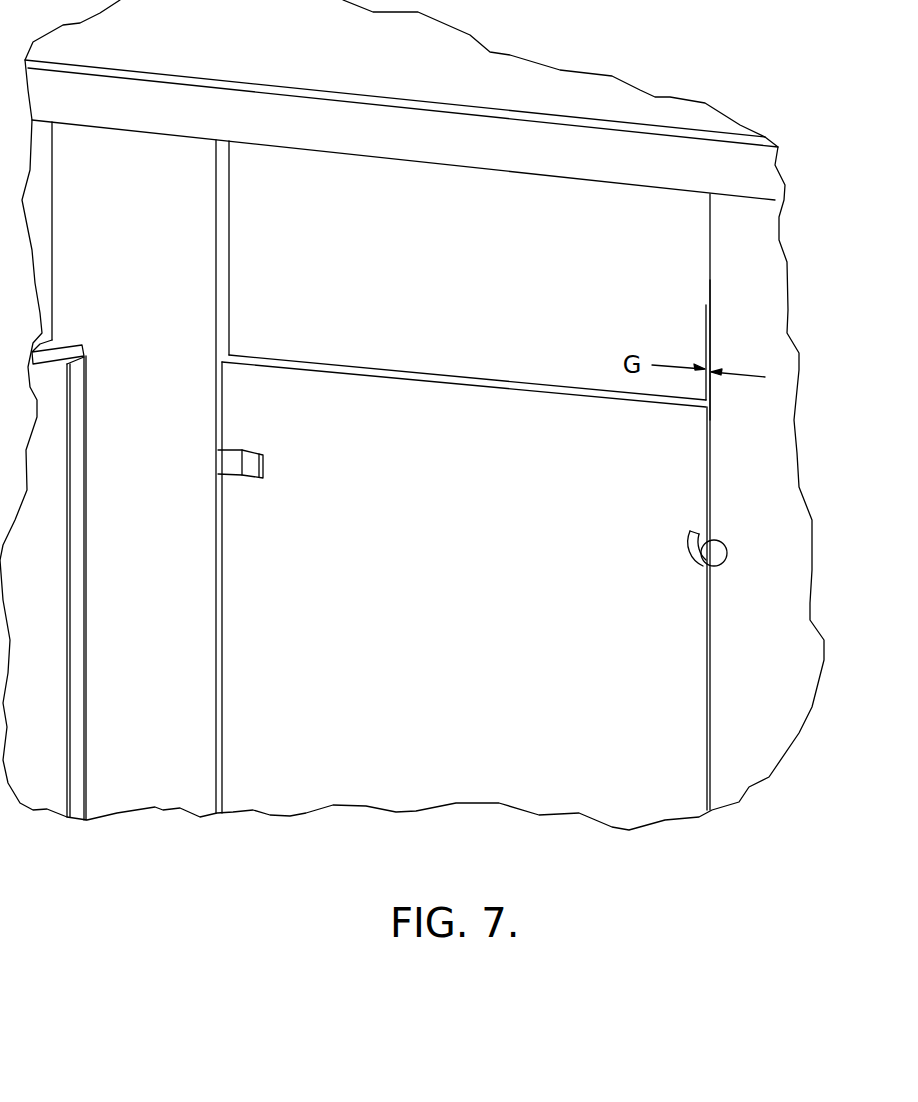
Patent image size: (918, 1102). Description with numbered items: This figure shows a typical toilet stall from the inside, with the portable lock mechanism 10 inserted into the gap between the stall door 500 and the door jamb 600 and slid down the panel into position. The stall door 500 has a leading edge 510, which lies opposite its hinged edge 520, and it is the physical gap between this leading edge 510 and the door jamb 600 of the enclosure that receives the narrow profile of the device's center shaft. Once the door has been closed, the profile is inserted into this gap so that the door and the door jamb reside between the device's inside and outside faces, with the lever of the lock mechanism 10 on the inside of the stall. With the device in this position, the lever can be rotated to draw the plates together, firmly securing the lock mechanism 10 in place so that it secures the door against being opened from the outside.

The portable lock mechanism 10 is at (717, 552).
The stall door 500 is at (462, 596).
The leading edge 510 is at (709, 473).
The hinged edge 520 is at (221, 541).
The door jamb 600 is at (784, 659).